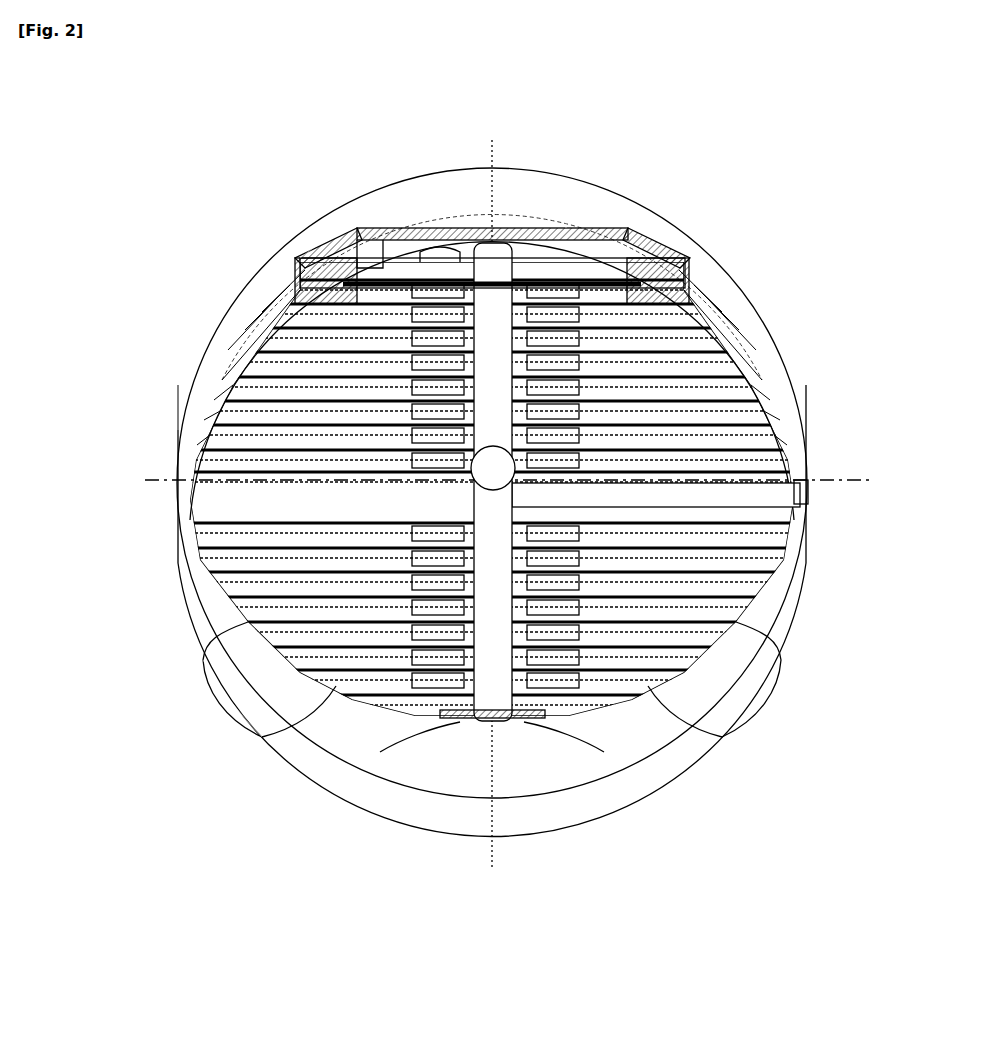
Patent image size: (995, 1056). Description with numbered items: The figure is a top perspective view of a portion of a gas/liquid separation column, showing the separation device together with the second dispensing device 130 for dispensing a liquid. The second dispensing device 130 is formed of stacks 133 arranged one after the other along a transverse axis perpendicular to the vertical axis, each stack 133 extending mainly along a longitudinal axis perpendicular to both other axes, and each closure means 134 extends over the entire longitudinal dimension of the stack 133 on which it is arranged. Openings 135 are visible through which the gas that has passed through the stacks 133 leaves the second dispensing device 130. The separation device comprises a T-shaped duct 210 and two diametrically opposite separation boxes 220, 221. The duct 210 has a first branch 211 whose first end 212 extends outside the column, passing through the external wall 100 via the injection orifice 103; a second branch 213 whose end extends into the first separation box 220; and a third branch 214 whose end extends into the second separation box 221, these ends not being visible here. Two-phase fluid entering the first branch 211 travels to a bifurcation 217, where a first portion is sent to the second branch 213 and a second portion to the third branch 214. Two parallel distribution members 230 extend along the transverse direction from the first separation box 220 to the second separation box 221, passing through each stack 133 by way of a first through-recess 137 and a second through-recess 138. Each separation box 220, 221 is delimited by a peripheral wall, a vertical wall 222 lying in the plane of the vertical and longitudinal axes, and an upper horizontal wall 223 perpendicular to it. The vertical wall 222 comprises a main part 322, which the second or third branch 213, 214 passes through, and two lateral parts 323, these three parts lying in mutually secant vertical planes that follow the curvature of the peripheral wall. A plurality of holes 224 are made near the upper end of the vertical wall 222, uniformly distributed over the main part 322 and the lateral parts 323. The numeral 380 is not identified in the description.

The external wall 100 is at (707, 242).
The injection orifice 103 is at (814, 497).
The second dispensing device 130 is at (240, 388).
The stack 133 is at (212, 576).
The closure means 134 is at (247, 633).
The opening 135 is at (216, 580).
The first through-recess 137 is at (560, 722).
The second through-recess 138 is at (440, 727).
The duct 210 is at (692, 468).
The first branch 211 is at (806, 478).
The first end 212 is at (812, 480).
The second branch 213 is at (598, 204).
The third branch 214 is at (700, 670).
The bifurcation 217 is at (305, 264).
The first separation box 220 is at (568, 202).
The second separation box 221 is at (478, 714).
The vertical wall 222 is at (368, 268).
The upper horizontal wall 223 is at (493, 162).
The holes 224 is at (427, 229).
The distribution member 230 is at (250, 740).
The main part 322 is at (392, 258).
The lateral part 323 is at (345, 290).
The gap 380 is at (410, 197).